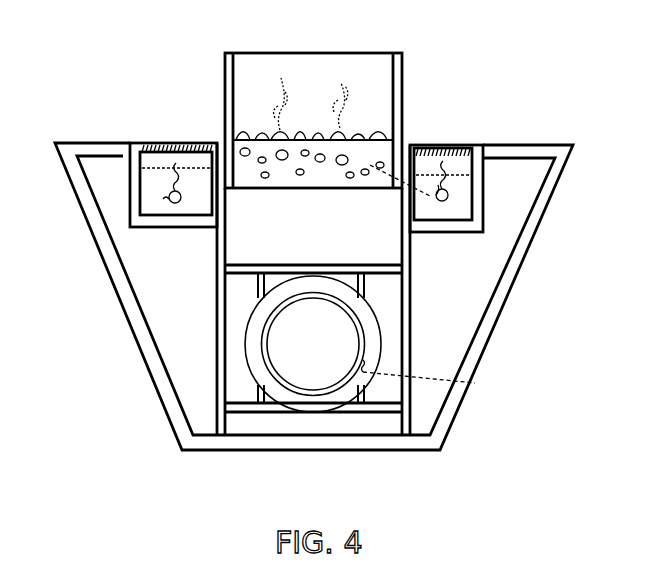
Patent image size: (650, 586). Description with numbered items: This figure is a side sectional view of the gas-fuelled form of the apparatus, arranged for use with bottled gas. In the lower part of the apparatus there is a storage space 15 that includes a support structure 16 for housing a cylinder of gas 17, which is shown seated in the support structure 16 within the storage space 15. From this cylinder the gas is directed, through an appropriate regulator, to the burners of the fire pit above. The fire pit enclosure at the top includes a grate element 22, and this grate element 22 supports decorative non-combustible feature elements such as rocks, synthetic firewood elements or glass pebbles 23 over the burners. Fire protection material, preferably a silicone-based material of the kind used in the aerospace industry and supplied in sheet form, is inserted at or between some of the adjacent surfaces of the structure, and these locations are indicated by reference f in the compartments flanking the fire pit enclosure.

The storage space 15 is at (378, 299).
The support structure 16 is at (380, 406).
The cylinder of gas 17 is at (295, 345).
The grate element 22 is at (227, 140).
The glass pebbles 23 is at (345, 157).
The fire protection material f is at (140, 155).